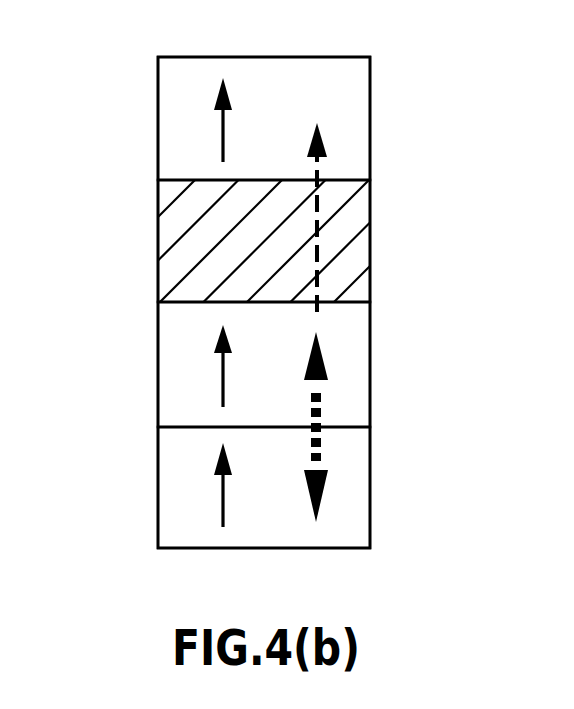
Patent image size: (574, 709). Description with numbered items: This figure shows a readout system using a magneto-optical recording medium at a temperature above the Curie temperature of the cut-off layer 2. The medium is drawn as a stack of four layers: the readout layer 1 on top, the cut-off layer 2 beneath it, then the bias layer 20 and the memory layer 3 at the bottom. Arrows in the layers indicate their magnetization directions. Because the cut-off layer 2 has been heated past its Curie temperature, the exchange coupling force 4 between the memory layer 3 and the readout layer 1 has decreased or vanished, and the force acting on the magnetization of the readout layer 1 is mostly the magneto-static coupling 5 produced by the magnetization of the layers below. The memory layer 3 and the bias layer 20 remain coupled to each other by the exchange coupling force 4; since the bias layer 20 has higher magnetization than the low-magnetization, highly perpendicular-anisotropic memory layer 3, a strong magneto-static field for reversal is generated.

The readout layer 1 is at (158, 123).
The cut-off layer 2 is at (158, 246).
The bias layer 20 is at (158, 368).
The memory layer 3 is at (158, 487).
The exchange coupling force 4 is at (322, 412).
The magneto-static coupling 5 is at (317, 230).